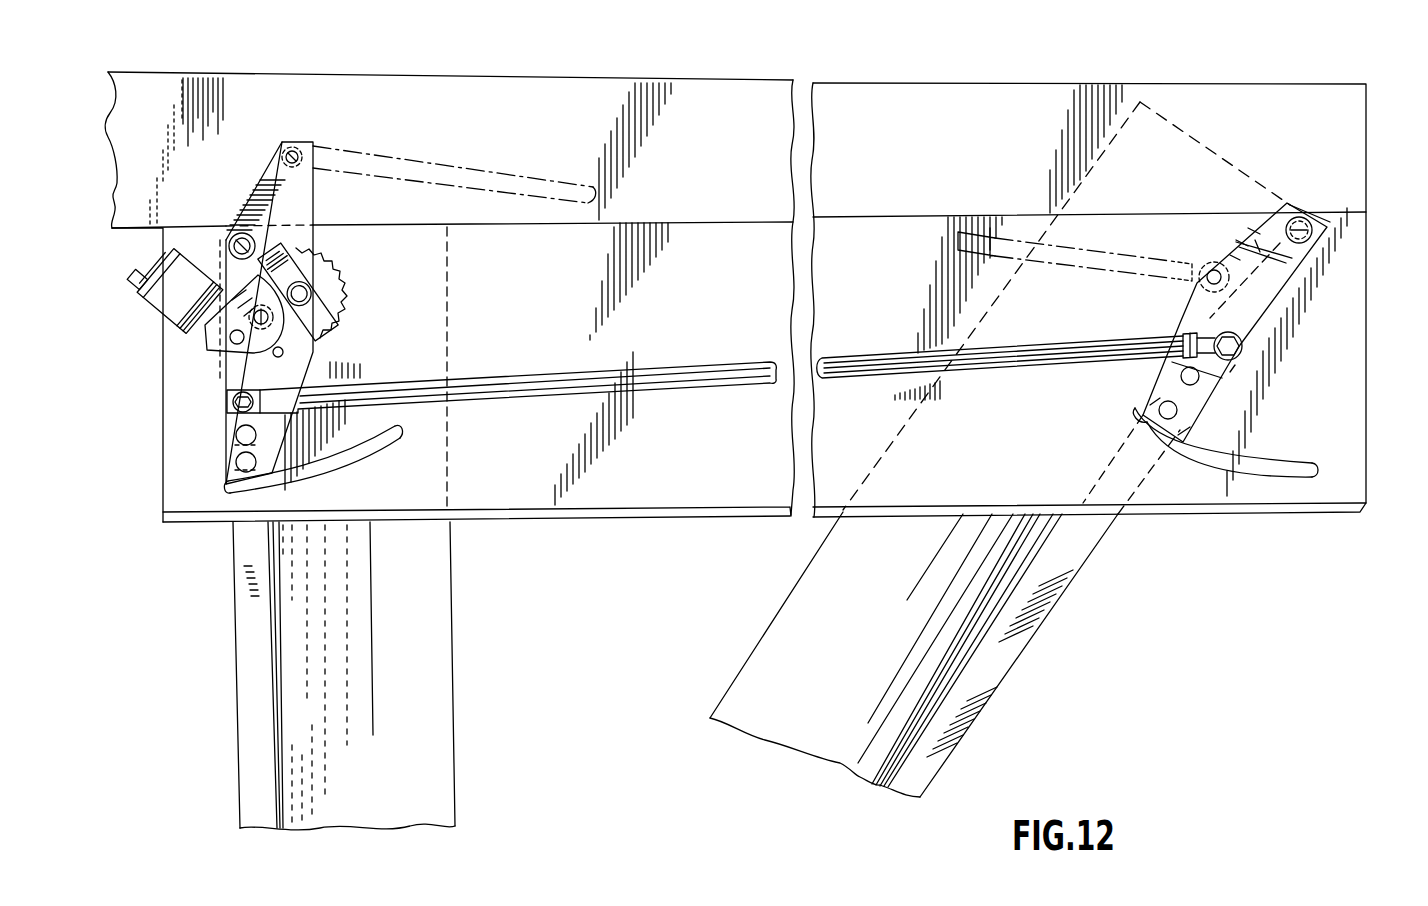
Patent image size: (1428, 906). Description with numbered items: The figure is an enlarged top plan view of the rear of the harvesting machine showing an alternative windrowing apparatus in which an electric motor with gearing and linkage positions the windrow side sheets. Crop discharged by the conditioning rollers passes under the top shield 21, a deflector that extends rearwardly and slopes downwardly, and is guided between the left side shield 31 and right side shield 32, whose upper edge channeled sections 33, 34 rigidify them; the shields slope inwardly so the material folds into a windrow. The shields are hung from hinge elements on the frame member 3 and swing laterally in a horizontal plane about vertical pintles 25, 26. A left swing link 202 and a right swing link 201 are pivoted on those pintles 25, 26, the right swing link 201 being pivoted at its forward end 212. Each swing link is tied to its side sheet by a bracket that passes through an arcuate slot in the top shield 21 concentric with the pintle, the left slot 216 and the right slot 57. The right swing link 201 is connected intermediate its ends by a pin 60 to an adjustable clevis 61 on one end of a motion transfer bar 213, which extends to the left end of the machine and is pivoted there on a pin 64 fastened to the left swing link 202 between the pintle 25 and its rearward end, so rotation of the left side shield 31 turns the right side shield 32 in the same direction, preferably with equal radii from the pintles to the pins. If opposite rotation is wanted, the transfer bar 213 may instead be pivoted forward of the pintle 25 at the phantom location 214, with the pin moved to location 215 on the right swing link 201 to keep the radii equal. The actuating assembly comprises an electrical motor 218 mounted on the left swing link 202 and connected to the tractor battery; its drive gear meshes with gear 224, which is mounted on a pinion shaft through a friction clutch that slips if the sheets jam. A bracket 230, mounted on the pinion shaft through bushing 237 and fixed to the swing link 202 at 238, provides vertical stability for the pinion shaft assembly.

The frame member 3 is at (1340, 176).
The top shield 21 is at (718, 483).
The vertical pintle 25 is at (235, 238).
The vertical pintle 26 is at (1318, 240).
The left side shield 31 is at (443, 743).
The right side shield 32 is at (765, 673).
The upper edge channeled section 33 is at (252, 678).
The upper edge channeled section 34 is at (992, 672).
The arcuate slot 57 is at (1195, 452).
The pin 60 is at (1237, 334).
The adjustable clevis 61 is at (1235, 365).
The pin 64 is at (228, 417).
The right swing link 201 is at (1213, 322).
The left swing link 202 is at (275, 178).
The forward end 212 is at (1320, 213).
The motion transfer bar 213 is at (849, 357).
The alternative pivot location 214 is at (285, 152).
The adjusted pin location 215 is at (1213, 270).
The arcuate slot 216 is at (357, 462).
The electrical motor 218 is at (166, 320).
The gear 224 is at (314, 254).
The bracket 230 is at (333, 322).
The bushing 237 is at (315, 294).
The attachment point 238 is at (300, 358).